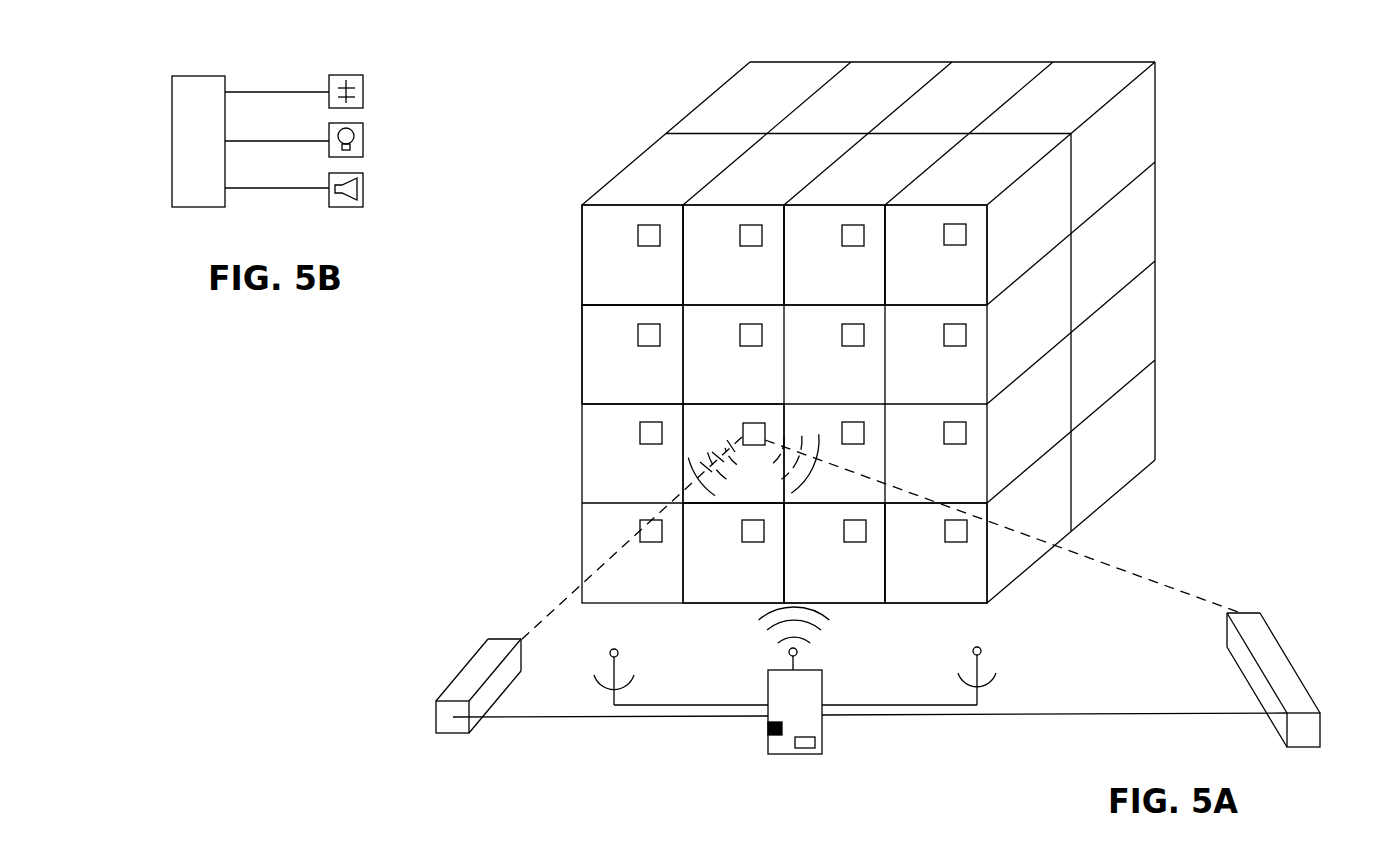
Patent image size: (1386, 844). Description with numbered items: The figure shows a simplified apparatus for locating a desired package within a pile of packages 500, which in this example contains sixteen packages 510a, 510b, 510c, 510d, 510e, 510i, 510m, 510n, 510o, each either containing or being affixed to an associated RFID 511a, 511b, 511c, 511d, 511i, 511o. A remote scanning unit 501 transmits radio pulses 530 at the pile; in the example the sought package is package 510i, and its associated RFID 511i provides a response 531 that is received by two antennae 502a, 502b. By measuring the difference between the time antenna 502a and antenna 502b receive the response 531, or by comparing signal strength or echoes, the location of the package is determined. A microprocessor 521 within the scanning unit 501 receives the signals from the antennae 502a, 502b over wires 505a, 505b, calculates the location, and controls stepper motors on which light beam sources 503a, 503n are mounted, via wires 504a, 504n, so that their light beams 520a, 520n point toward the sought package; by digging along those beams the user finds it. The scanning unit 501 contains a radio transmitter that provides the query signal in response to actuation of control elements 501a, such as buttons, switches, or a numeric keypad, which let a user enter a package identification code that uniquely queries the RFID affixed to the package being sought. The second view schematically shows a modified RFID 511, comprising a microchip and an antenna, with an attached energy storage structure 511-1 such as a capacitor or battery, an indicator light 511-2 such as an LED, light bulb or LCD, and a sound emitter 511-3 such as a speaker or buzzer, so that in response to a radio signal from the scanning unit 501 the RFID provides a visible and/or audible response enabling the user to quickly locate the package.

In FIG. 5A, the pile of packages 500 is at (1055, 50).
In FIG. 5A, the package 510a is at (657, 292).
In FIG. 5A, the package 510b is at (758, 292).
In FIG. 5A, the package 510c is at (860, 292).
In FIG. 5A, the package 510d is at (962, 289).
In FIG. 5A, the package 510e is at (657, 391).
In FIG. 5A, the sought package 510i is at (734, 435).
In FIG. 5A, the package 510m is at (762, 588).
In FIG. 5A, the package 510n is at (862, 588).
In FIG. 5A, the package 510o is at (962, 588).
In FIG. 5A, the RFID 511a is at (647, 236).
In FIG. 5A, the RFID 511b is at (750, 231).
In FIG. 5A, the RFID 511c is at (853, 231).
In FIG. 5A, the RFID 511d is at (955, 230).
In FIG. 5A, the RFID 511i is at (757, 423).
In FIG. 5A, the RFID 511o is at (967, 536).
In FIG. 5B, the RFID 511 is at (213, 197).
In FIG. 5B, the energy storage structure 511-1 is at (363, 101).
In FIG. 5B, the indicator light 511-2 is at (363, 150).
In FIG. 5B, the sound emitter 511-3 is at (363, 198).
In FIG. 5A, the response 531 is at (812, 450).
In FIG. 5A, the radio pulses 530 is at (834, 632).
In FIG. 5A, the light beam 520a is at (560, 600).
In FIG. 5A, the light beam 520n is at (1128, 572).
In FIG. 5A, the light beam source 503a is at (474, 666).
In FIG. 5A, the light beam source 503n is at (1281, 666).
In FIG. 5A, the wire 504a is at (562, 718).
In FIG. 5A, the wire 504n is at (953, 716).
In FIG. 5A, the wire 505a is at (688, 718).
In FIG. 5A, the wire 505b is at (864, 702).
In FIG. 5A, the antenna 502a is at (626, 667).
In FIG. 5A, the antenna 502b is at (989, 665).
In FIG. 5A, the remote scanning unit 501 is at (810, 703).
In FIG. 5A, the control elements 501a is at (767, 729).
In FIG. 5A, the microprocessor 521 is at (806, 742).